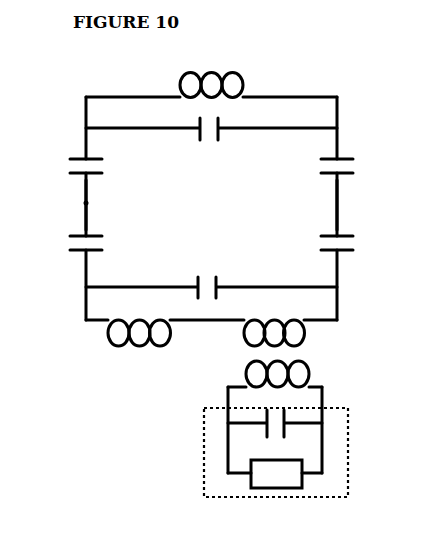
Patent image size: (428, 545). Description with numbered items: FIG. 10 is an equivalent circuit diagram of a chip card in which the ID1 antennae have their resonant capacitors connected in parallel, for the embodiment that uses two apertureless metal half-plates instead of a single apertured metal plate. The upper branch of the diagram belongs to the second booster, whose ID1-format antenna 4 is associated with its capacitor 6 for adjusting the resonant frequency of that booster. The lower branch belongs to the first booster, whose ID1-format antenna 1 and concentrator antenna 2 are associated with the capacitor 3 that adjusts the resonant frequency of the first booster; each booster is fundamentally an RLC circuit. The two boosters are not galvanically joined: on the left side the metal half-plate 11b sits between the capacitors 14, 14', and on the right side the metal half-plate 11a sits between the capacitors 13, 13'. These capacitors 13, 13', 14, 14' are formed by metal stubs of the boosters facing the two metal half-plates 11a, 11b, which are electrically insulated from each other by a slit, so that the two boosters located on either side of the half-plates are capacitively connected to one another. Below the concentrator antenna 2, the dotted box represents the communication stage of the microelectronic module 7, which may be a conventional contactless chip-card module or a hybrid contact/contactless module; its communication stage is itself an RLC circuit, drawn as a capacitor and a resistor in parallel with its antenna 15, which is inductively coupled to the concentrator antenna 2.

The antenna 1 is at (108, 350).
The concentrator antenna 2 is at (306, 340).
The capacitor 3 is at (228, 280).
The antenna 4 is at (242, 85).
The capacitor 6 is at (221, 122).
The microelectronic module 7 is at (258, 445).
The metal half-plate 11a is at (339, 190).
The metal half-plate 11b is at (86, 203).
The capacitor 13 is at (359, 151).
The capacitor 13' is at (356, 261).
The capacitor 14 is at (64, 137).
The capacitor 14' is at (67, 269).
The antenna 15 is at (309, 368).